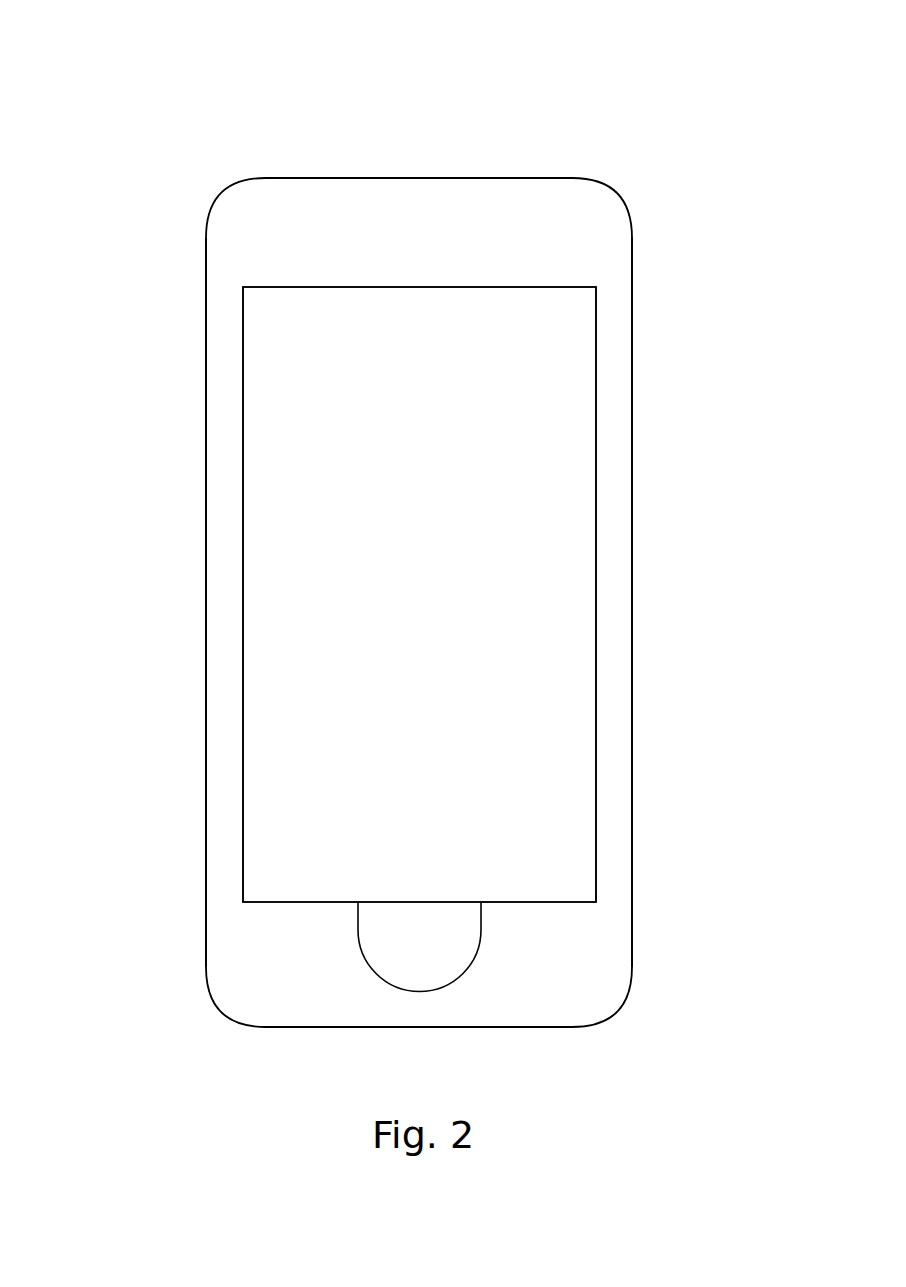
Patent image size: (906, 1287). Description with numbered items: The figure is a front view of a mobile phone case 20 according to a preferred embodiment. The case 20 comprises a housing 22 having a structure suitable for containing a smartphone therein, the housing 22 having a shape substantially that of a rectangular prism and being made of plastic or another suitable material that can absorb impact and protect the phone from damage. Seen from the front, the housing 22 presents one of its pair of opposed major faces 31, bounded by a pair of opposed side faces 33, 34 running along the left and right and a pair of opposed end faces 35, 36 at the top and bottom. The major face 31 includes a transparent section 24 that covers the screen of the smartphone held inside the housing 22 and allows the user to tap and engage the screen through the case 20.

The case 20 is at (157, 220).
The housing 22 is at (615, 315).
The transparent section 24 is at (527, 525).
The major face 31 is at (262, 912).
The side face 33 is at (205, 623).
The side face 34 is at (632, 667).
The end face 35 is at (407, 178).
The end face 36 is at (375, 1027).